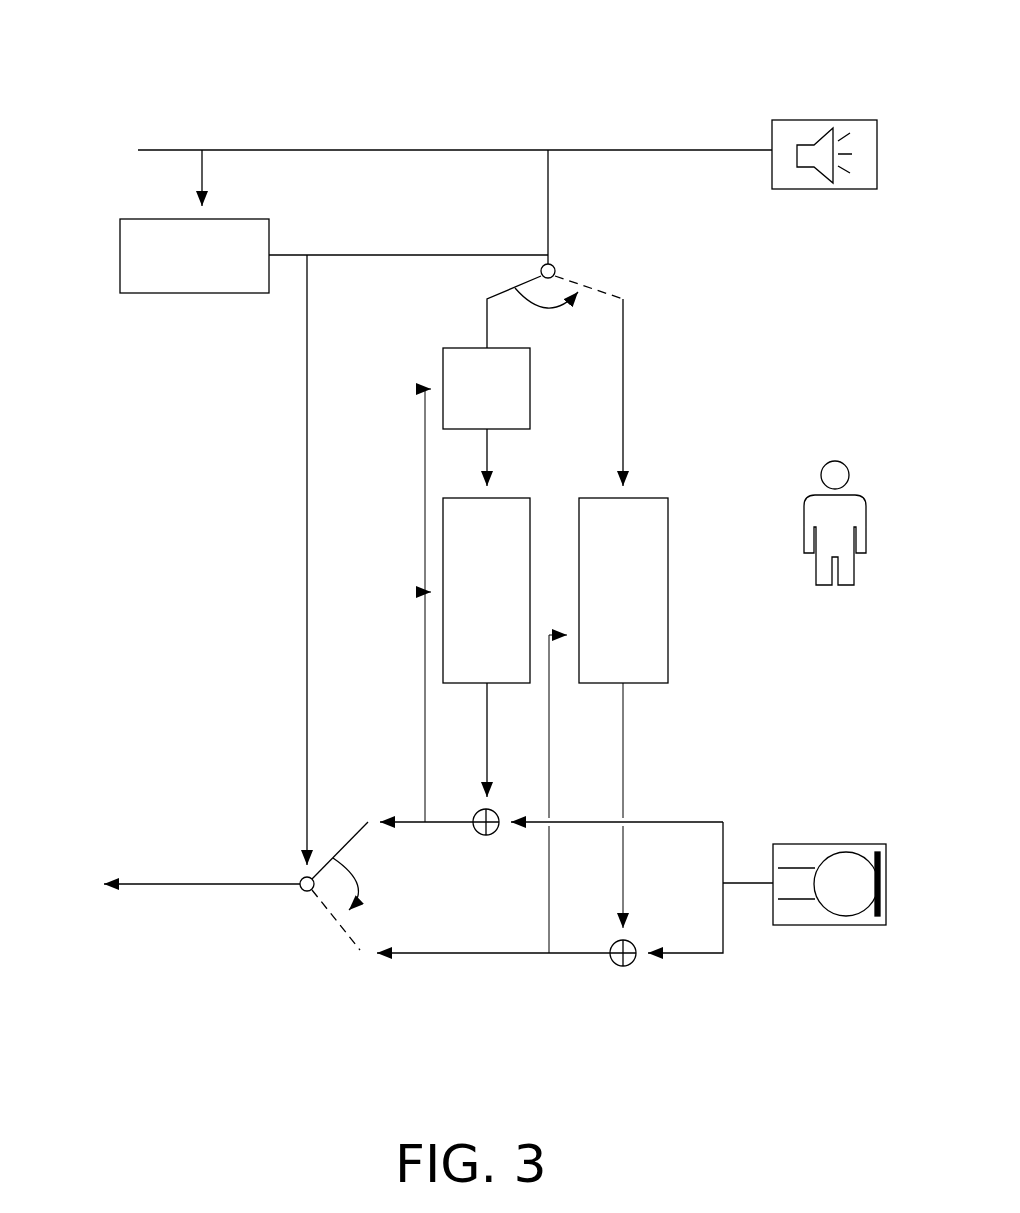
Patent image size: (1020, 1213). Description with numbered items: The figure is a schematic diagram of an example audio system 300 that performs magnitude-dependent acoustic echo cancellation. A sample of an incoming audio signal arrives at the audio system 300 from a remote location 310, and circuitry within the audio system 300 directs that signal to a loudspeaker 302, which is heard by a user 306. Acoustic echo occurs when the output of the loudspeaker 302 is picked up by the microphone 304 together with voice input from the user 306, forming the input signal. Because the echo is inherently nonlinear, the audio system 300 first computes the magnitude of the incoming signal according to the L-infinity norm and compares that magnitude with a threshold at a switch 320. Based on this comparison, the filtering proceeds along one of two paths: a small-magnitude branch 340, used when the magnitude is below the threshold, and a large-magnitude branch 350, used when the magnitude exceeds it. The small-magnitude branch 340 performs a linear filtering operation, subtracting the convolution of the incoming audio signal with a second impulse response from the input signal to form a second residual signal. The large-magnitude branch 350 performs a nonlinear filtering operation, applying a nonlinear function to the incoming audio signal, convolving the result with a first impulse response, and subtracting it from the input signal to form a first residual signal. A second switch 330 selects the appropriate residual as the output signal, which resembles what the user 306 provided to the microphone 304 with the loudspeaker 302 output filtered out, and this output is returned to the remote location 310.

The audio system 300 is at (104, 49).
The loudspeaker 302 is at (822, 189).
The microphone 304 is at (872, 844).
The user 306 is at (840, 586).
The remote location 310 is at (158, 89).
The switch 320 is at (556, 266).
The output switch 330 is at (300, 892).
The small-magnitude branch 340 is at (678, 467).
The large-magnitude branch 350 is at (403, 458).